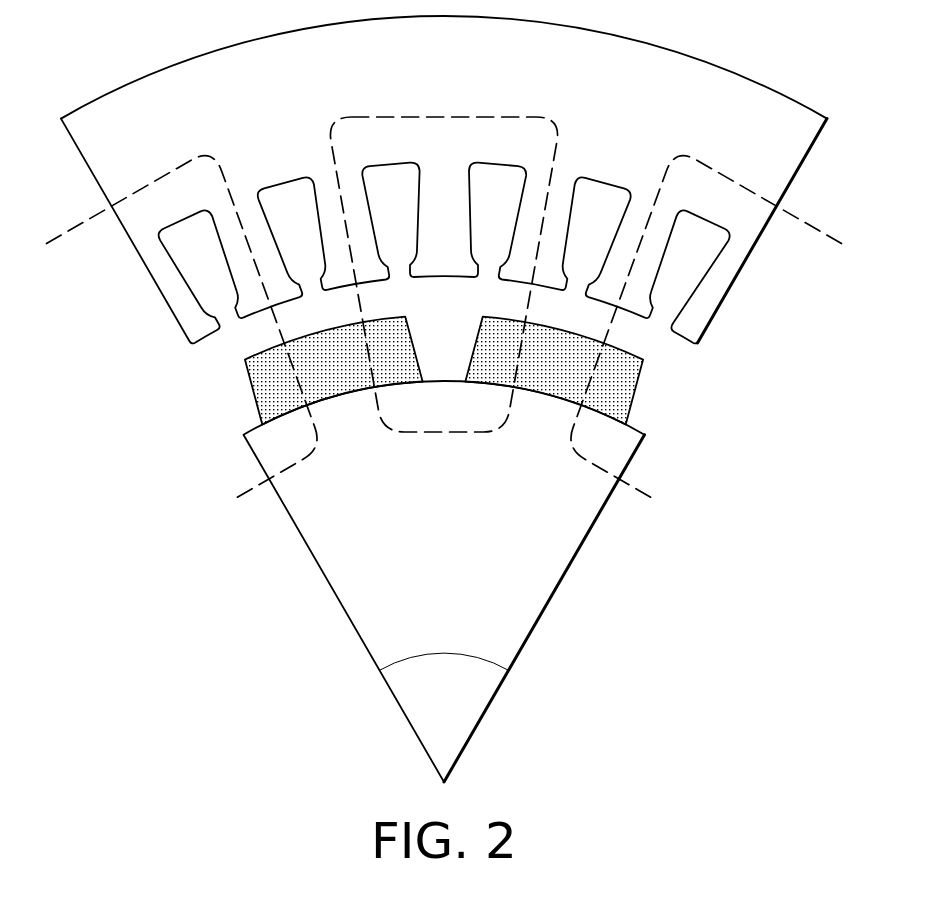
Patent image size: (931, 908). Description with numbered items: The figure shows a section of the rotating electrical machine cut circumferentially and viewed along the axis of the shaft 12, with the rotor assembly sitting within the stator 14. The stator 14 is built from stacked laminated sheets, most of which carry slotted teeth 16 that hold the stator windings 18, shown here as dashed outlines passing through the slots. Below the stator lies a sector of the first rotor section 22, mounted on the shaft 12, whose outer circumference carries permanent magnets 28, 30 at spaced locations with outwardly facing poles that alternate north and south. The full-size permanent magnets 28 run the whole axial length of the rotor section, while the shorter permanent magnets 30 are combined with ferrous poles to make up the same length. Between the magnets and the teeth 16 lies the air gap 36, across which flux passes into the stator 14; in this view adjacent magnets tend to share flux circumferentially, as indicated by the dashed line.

The shaft 12 is at (482, 721).
The stator 14 is at (752, 80).
The slotted teeth 16 is at (736, 277).
The stator windings 18 is at (693, 283).
The first rotor section 22 is at (565, 576).
The permanent magnets 28 is at (634, 395).
The shorter permanent magnets 30 is at (254, 393).
The air gap 36 is at (646, 342).